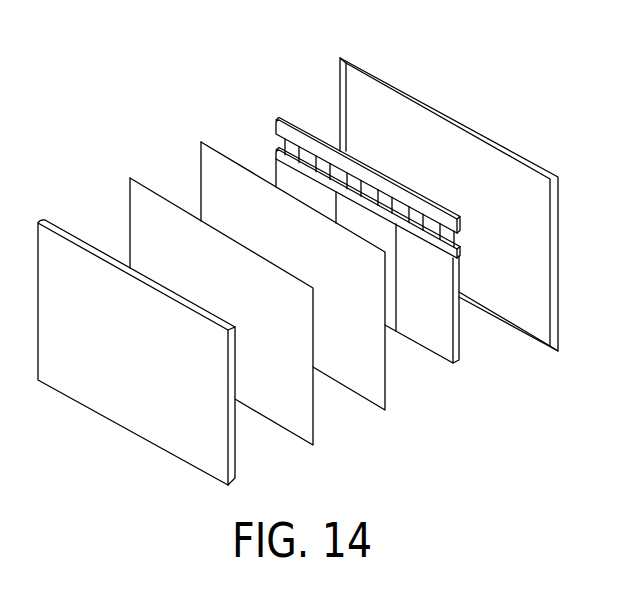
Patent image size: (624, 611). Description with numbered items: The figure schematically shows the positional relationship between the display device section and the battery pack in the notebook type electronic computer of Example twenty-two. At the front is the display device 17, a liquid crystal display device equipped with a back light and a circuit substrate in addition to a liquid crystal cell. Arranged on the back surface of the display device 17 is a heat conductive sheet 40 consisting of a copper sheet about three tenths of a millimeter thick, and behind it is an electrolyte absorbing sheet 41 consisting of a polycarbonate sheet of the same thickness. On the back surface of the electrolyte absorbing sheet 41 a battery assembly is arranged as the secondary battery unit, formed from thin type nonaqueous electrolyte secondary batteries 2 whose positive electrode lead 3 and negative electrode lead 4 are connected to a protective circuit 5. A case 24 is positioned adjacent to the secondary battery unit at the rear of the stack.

The thin type nonaqueous electrolyte secondary battery 2 is at (442, 347).
The positive electrode lead 3 is at (280, 160).
The negative electrode lead 4 is at (281, 148).
The protective circuit 5 is at (283, 120).
The display device 17 is at (91, 406).
The case 24 is at (352, 83).
The heat conductive sheet 40 is at (137, 200).
The electrolyte absorbing sheet 41 is at (210, 163).